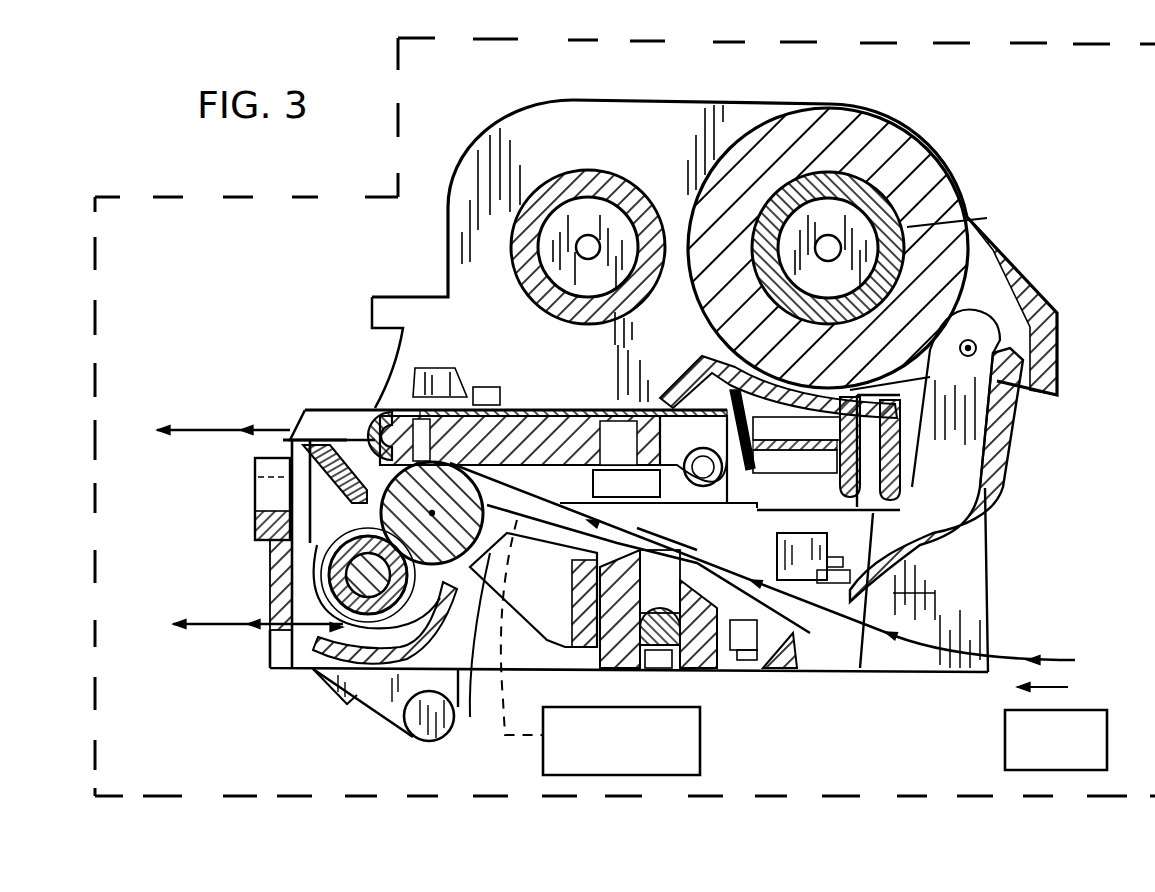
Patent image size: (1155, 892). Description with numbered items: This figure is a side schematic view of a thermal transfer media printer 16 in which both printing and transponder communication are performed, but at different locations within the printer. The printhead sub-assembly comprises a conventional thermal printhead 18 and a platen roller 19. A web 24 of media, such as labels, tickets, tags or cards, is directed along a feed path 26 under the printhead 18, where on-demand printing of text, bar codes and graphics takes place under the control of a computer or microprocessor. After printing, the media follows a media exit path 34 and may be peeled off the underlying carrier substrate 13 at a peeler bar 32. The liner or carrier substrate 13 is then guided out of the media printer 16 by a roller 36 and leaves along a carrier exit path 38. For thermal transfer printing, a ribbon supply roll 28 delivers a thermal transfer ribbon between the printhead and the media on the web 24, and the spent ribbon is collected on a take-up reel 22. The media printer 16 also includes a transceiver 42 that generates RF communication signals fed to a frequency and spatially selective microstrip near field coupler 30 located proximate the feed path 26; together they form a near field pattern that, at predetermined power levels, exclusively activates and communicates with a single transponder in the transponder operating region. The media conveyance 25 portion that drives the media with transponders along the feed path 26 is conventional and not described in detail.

The carrier substrate 13 is at (228, 627).
The media printer 16 is at (237, 193).
The thermal printhead 18 is at (313, 412).
The platen roller 19 is at (378, 490).
The take-up reel 22 is at (592, 172).
The web 24 is at (783, 569).
The media conveyance 25 is at (1056, 740).
The feed path 26 is at (1066, 687).
The ribbon supply roll 28 is at (903, 158).
The near field coupler 30 is at (455, 637).
The peeler bar 32 is at (255, 527).
The media exit path 34 is at (193, 430).
The roller 36 is at (328, 585).
The carrier exit path 38 is at (213, 637).
The transceiver 42 is at (621, 741).